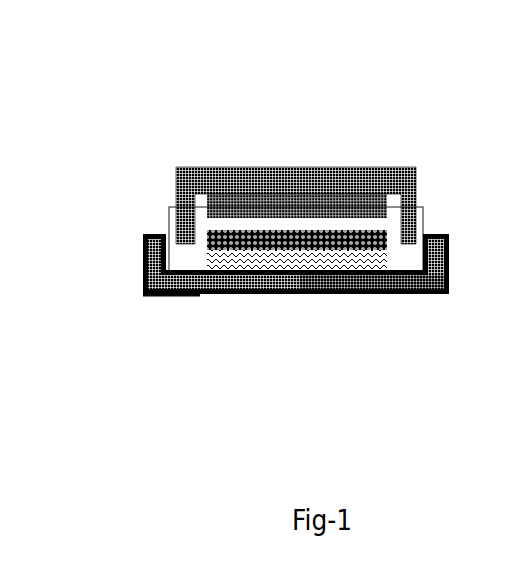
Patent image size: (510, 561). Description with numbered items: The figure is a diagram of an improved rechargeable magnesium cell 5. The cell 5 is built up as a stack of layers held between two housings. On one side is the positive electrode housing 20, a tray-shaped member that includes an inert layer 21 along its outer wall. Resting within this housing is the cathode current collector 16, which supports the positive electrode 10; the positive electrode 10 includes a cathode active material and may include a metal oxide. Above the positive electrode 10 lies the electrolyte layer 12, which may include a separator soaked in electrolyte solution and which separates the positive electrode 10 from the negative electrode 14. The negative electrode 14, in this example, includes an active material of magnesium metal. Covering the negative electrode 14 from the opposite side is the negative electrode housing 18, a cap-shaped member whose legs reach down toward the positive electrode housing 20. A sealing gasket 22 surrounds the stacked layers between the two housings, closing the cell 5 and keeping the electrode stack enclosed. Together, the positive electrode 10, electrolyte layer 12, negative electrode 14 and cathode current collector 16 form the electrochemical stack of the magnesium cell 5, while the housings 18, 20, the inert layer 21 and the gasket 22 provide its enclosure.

The rechargeable magnesium cell 5 is at (340, 97).
The positive electrode 10 is at (403, 278).
The electrolyte layer 12 is at (211, 219).
The negative electrode 14 is at (369, 210).
The cathode current collector 16 is at (206, 264).
The negative electrode housing 18 is at (288, 168).
The positive electrode housing 20 is at (158, 258).
The inert layer 21 is at (147, 298).
The sealing gasket 22 is at (408, 250).